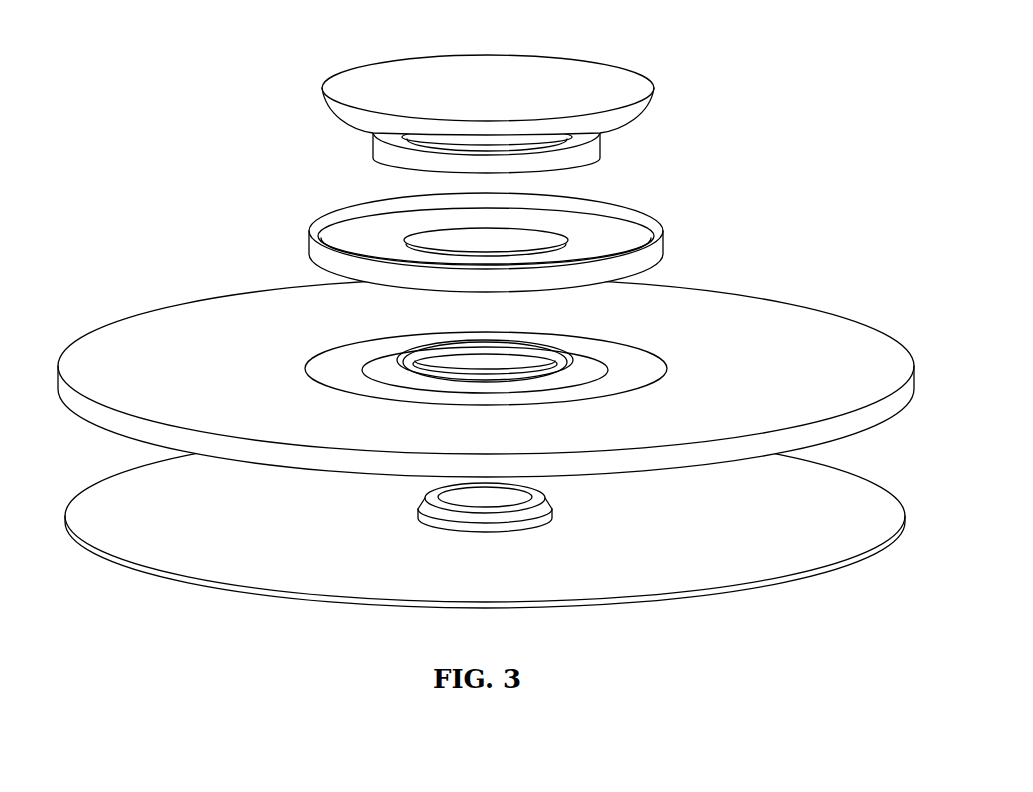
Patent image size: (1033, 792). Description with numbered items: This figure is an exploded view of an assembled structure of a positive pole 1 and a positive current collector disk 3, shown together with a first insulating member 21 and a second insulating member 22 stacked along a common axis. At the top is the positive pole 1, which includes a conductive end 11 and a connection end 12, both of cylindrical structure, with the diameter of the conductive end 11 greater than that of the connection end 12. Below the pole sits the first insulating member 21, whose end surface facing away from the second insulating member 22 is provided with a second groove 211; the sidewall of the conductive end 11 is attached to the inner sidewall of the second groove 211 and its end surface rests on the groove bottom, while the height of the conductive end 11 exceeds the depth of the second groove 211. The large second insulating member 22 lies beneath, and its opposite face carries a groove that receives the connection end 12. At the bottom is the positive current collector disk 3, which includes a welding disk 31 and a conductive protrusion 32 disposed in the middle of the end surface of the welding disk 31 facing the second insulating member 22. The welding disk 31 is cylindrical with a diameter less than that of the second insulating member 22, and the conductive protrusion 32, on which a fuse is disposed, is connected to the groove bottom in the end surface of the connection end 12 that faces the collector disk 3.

The positive pole 1 is at (486, 113).
The conductive end 11 is at (625, 88).
The connection end 12 is at (588, 152).
The first insulating member 21 is at (489, 237).
The second groove 211 is at (318, 243).
The second insulating member 22 is at (143, 332).
The positive current collector disk 3 is at (874, 513).
The welding disk 31 is at (126, 498).
The conductive protrusion 32 is at (531, 510).